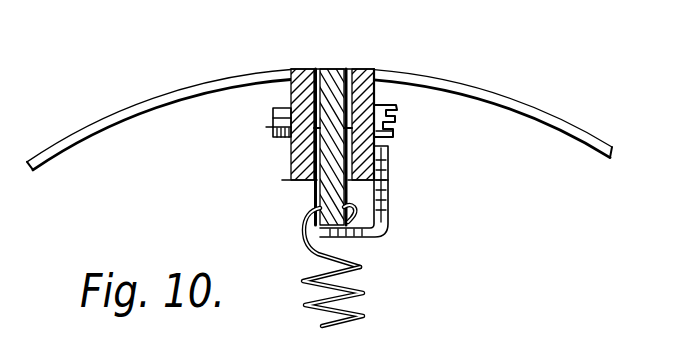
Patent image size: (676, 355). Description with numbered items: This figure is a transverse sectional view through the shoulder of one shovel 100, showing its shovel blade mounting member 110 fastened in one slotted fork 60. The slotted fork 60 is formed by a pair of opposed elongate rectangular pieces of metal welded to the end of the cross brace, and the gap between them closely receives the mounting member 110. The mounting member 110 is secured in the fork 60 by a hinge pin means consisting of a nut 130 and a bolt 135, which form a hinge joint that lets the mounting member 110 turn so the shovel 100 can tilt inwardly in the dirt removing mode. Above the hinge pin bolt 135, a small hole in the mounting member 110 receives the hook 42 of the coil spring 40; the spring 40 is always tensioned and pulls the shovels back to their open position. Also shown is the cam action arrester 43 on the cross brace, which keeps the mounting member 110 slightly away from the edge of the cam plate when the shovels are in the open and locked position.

The shovel 100 is at (537, 104).
The slotted fork 60 is at (300, 68).
The shovel blade mounting member 110 is at (333, 68).
The nut 130 is at (274, 126).
The bolt 135 is at (393, 128).
The cam action arrester 43 is at (394, 232).
The hook 42 is at (306, 232).
The coil spring 40 is at (366, 290).